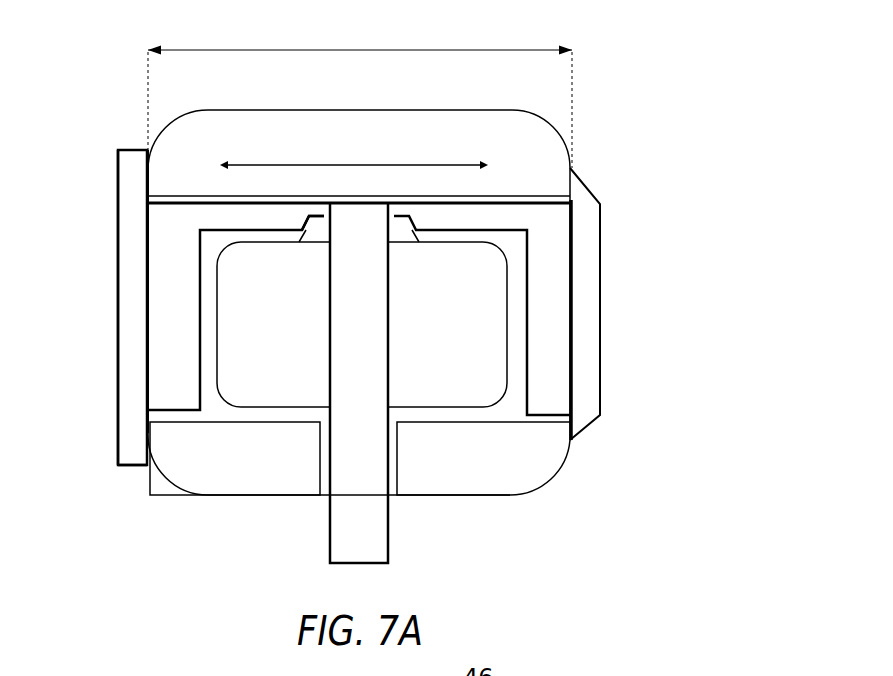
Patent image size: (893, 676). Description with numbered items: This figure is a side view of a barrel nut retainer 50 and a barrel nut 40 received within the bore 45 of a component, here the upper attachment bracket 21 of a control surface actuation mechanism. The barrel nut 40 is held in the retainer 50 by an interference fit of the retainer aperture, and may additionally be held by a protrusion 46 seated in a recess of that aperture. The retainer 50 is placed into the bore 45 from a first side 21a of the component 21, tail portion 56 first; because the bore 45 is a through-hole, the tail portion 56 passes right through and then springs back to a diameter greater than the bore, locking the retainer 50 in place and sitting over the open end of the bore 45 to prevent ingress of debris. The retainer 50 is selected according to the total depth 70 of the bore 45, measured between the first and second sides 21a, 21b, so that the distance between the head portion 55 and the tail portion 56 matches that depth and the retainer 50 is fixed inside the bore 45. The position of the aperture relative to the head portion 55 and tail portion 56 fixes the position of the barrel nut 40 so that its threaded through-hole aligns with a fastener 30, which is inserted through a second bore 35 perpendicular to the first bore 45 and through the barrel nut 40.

The total depth 70 is at (528, 50).
The upper attachment bracket 21 is at (470, 140).
The first side 21a is at (145, 172).
The second side 21b is at (572, 175).
The protrusion 46 is at (318, 226).
The barrel nut retainer 50 is at (544, 290).
The tail portion 56 is at (583, 350).
The head portion 55 is at (140, 365).
The barrel nut 40 is at (262, 372).
The bore 45 is at (293, 418).
The second bore 35 is at (403, 458).
The fastener 30 is at (365, 525).